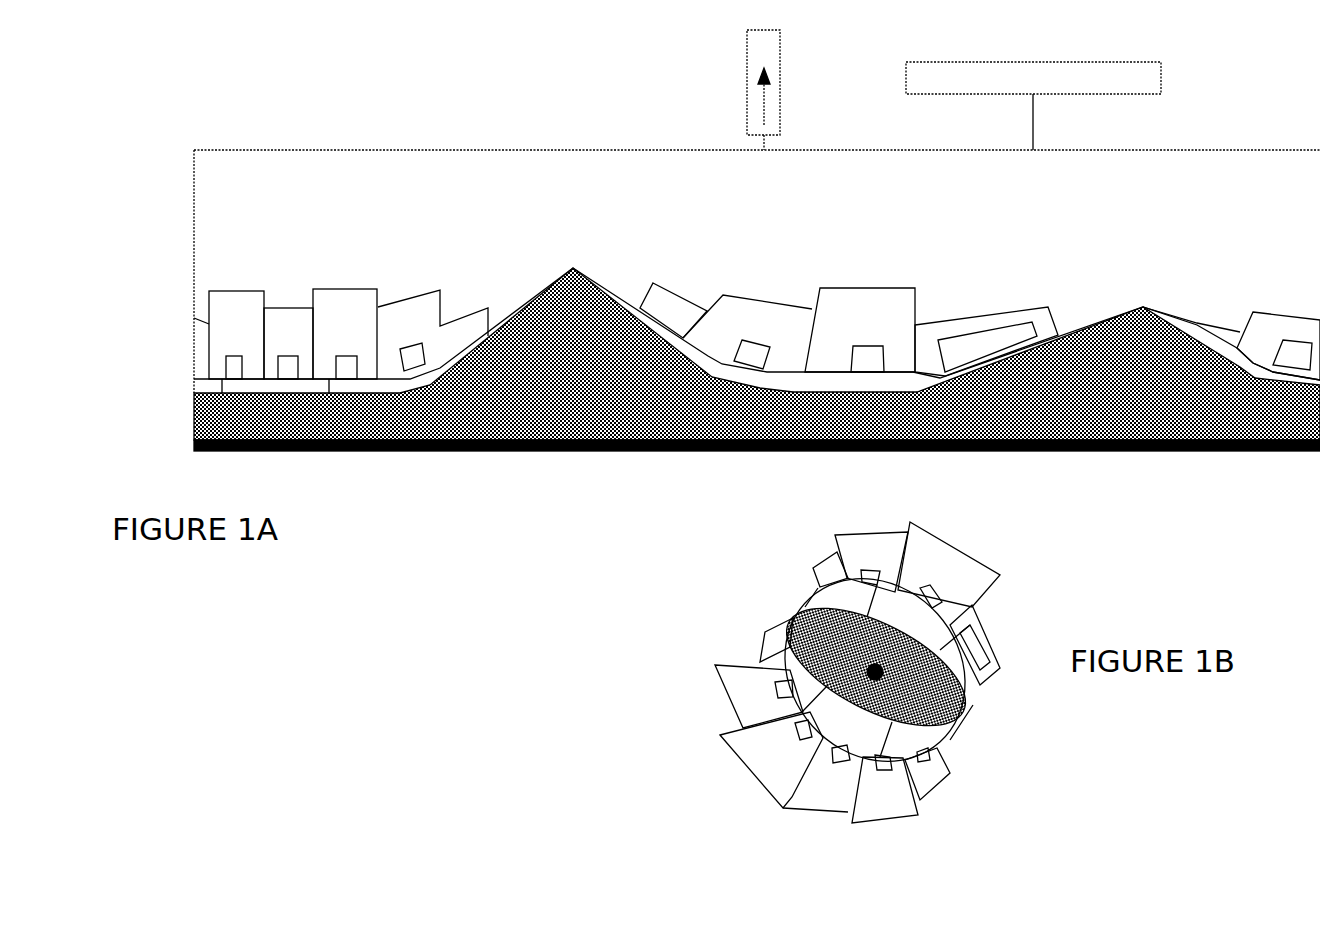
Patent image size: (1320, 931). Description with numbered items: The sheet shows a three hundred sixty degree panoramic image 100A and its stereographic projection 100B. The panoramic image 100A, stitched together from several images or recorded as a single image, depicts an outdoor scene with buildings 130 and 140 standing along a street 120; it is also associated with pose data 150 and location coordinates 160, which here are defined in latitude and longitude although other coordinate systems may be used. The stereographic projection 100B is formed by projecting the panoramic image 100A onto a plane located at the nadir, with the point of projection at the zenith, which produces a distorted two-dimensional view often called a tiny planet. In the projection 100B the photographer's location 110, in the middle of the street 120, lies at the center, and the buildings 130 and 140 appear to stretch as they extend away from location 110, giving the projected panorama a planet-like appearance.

In FIG. 1A, the panoramic image 100A is at (521, 116).
In FIG. 1B, the stereographic projection 100B is at (737, 630).
In FIG. 1B, the location 110 is at (818, 682).
In FIG. 1A, the street 120 is at (537, 427).
In FIG. 1B, the street 120 is at (975, 708).
In FIG. 1A, the building 130 is at (772, 302).
In FIG. 1B, the building 130 is at (857, 532).
In FIG. 1A, the building 140 is at (238, 308).
In FIG. 1B, the building 140 is at (845, 803).
In FIG. 1A, the pose data 150 is at (1161, 94).
In FIG. 1A, the location coordinates 160 is at (764, 115).